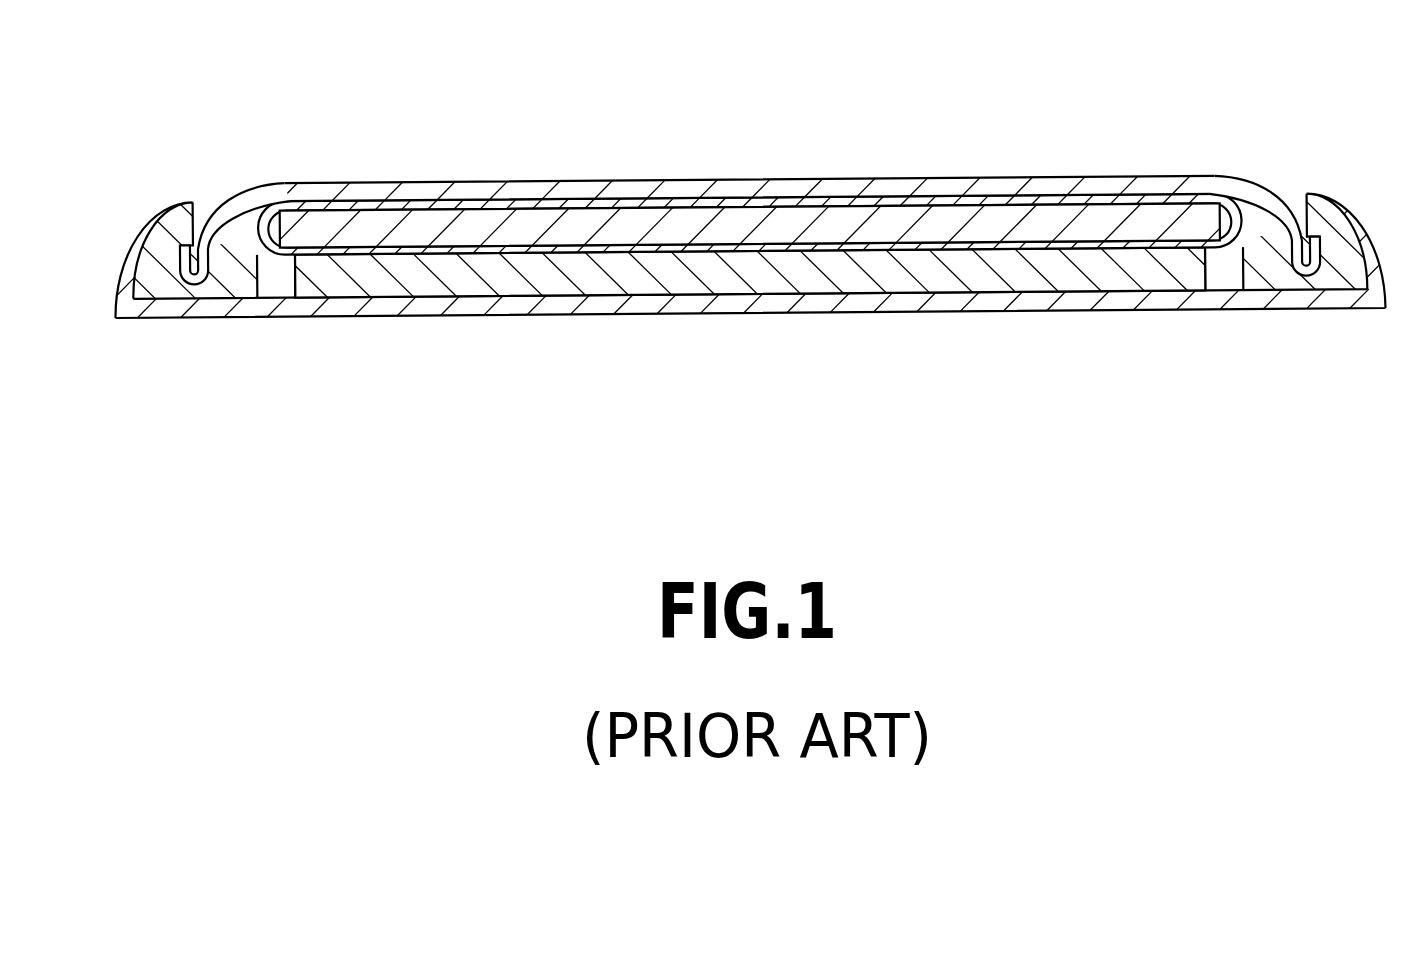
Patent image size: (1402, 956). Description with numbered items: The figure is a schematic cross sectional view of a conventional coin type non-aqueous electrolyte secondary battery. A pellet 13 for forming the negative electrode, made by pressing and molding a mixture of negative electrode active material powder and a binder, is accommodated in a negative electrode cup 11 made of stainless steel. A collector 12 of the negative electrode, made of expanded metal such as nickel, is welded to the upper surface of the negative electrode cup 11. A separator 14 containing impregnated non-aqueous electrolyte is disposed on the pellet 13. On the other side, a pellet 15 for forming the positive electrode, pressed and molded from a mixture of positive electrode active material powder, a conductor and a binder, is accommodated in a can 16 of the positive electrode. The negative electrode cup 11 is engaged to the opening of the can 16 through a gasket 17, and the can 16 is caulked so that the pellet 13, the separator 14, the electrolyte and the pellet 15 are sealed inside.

The negative electrode cup 11 is at (598, 182).
The collector of the negative electrode 12 is at (746, 129).
The pellet for forming the negative electrode 13 is at (820, 222).
The separator 14 is at (932, 252).
The pellet for forming the positive electrode 15 is at (635, 268).
The can of the positive electrode 16 is at (1102, 300).
The gasket 17 is at (214, 200).